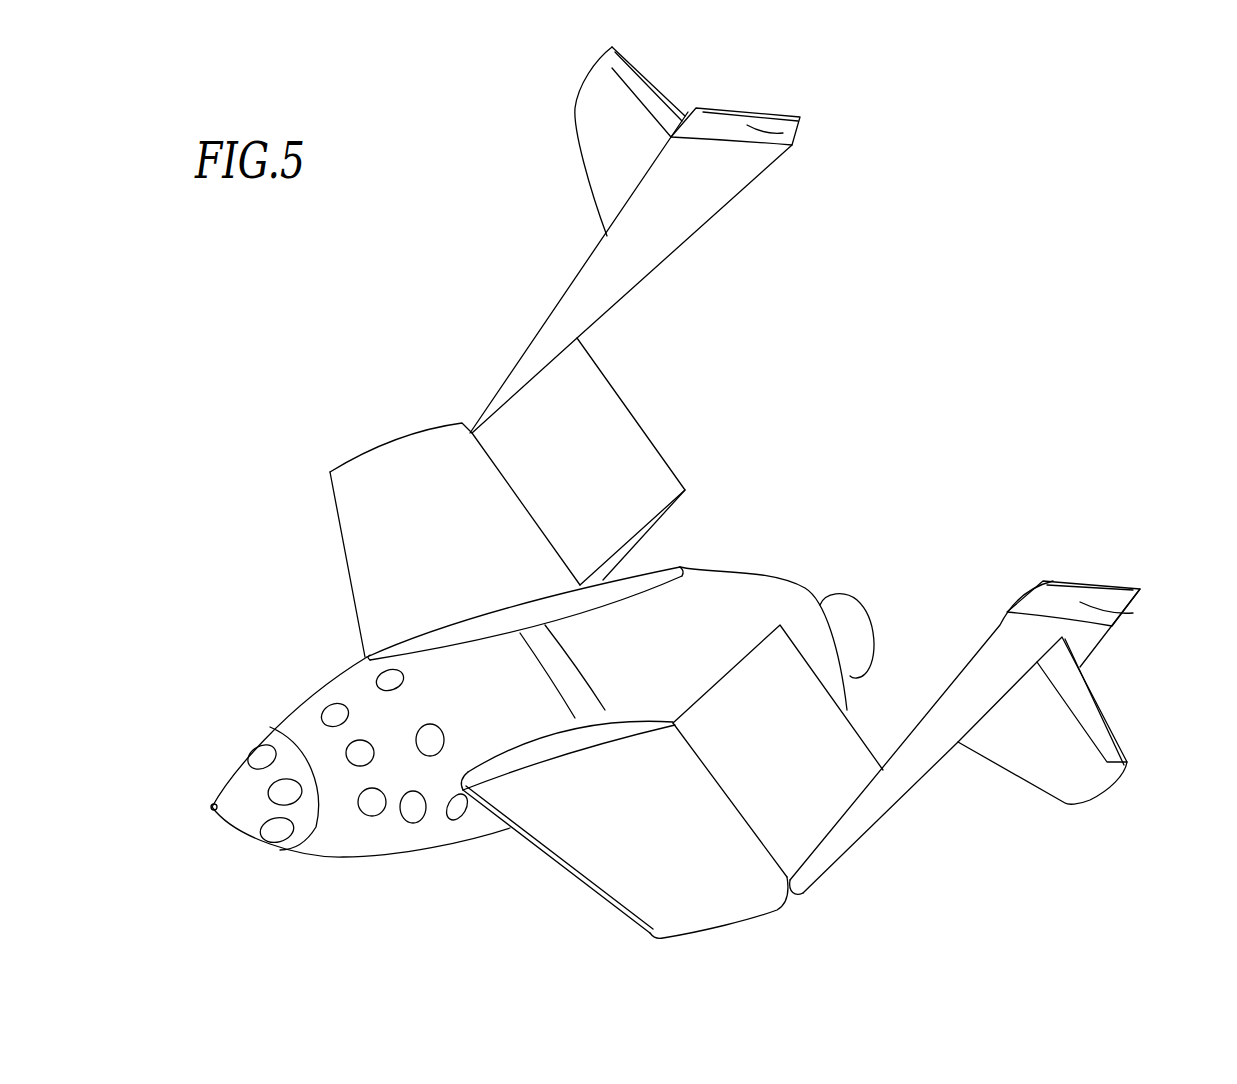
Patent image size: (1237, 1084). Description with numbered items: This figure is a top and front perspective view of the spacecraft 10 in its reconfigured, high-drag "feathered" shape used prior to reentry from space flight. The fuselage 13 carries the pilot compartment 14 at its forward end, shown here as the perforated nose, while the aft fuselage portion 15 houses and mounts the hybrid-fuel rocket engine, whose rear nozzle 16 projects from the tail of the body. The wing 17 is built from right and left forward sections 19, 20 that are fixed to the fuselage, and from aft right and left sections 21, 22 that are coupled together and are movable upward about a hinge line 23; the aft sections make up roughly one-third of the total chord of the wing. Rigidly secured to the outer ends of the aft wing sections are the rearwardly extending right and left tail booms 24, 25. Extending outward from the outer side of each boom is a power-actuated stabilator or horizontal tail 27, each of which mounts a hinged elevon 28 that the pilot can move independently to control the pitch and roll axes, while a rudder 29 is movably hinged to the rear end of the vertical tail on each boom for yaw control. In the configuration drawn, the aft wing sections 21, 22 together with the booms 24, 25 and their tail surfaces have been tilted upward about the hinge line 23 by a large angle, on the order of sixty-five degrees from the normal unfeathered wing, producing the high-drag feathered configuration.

The vehicle 10 is at (288, 635).
The fuselage 13 is at (392, 870).
The pilot compartment 14 is at (352, 832).
The aft fuselage portion 15 is at (698, 634).
The rear nozzle 16 is at (865, 600).
The wing 17 is at (560, 878).
The right forward wing section 19 is at (445, 522).
The left forward wing section 20 is at (657, 816).
The aft right wing section 21 is at (612, 430).
The aft left wing section 22 is at (833, 748).
The hinge line 23 is at (545, 540).
The right tail boom 24 is at (593, 260).
The left tail boom 25 is at (900, 787).
The horizontal tail 27 is at (620, 135).
The elevon 28 is at (655, 104).
The rudder 29 is at (800, 118).